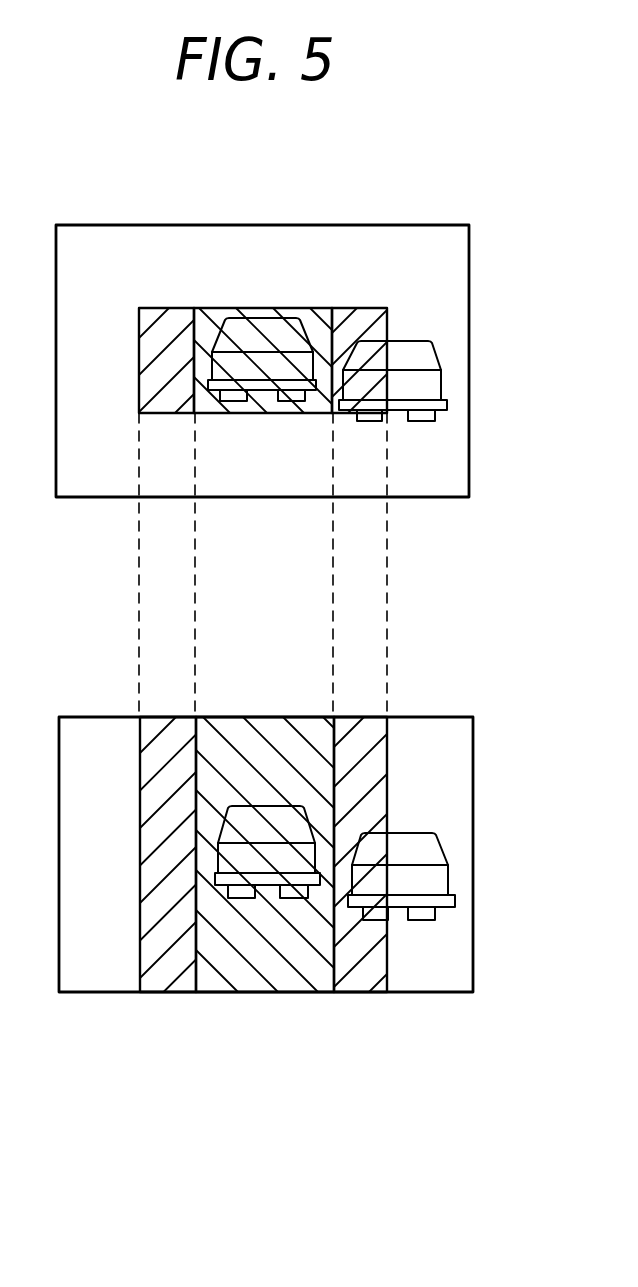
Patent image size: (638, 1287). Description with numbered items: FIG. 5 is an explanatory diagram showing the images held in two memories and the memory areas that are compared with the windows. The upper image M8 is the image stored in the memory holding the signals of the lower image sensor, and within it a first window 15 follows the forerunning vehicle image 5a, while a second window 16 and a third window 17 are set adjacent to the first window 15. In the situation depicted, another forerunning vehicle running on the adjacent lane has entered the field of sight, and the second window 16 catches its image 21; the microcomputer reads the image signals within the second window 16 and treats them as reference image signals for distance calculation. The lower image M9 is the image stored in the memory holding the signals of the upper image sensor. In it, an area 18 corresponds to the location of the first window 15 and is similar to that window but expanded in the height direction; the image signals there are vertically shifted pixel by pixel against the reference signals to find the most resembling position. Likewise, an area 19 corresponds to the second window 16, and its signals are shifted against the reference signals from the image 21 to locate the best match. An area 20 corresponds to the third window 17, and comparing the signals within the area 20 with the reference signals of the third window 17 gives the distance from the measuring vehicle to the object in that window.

The image in the memory 8 M8 is at (469, 281).
The image in the memory 9 M9 is at (473, 773).
The third window 17 is at (165, 320).
The forerunning vehicle image 5a is at (249, 318).
The first window 15 is at (312, 320).
The second window 16 is at (362, 325).
The image of another forerunning vehicle 21 is at (438, 352).
The area corresponding to the third window 20 is at (167, 742).
The area corresponding to the first window 18 is at (296, 746).
The area corresponding to the second window 19 is at (354, 740).